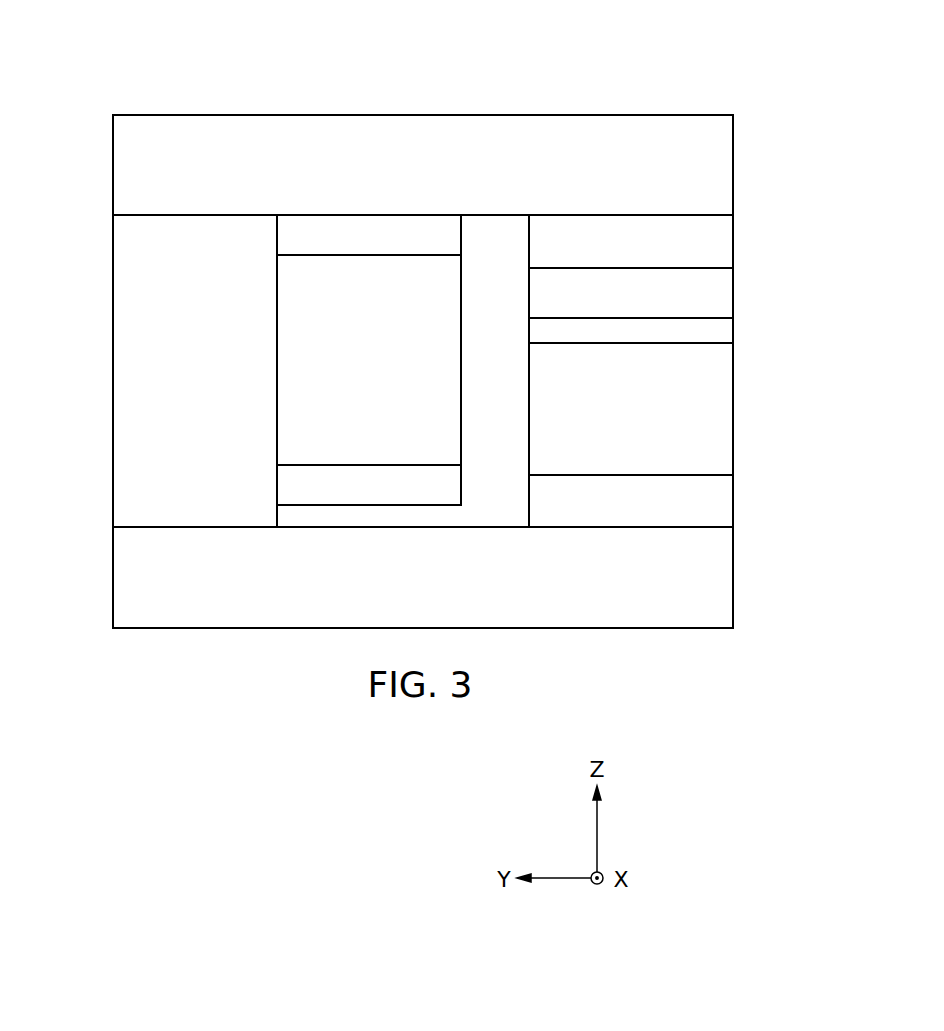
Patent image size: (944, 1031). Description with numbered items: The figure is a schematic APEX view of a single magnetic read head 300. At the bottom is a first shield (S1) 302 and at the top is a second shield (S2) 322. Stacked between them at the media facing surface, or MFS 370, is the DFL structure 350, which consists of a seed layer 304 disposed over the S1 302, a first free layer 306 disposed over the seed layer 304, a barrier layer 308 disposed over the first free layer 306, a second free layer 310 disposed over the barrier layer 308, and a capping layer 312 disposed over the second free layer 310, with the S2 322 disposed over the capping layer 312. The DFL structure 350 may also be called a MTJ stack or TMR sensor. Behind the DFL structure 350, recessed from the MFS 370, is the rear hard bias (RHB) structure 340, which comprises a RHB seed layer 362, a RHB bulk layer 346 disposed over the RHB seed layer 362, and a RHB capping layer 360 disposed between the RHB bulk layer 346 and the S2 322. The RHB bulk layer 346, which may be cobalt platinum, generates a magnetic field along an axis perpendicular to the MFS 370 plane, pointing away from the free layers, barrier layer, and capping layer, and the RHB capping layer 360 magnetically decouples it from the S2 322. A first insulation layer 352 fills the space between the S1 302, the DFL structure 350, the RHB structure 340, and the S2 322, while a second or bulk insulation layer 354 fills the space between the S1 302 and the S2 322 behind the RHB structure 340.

The single magnetic read head 300 is at (162, 96).
The first shield (S1) 302 is at (440, 593).
The seed layer 304 is at (648, 511).
The first free layer (FL) 306 is at (648, 424).
The barrier layer 308 is at (571, 329).
The second free layer (FL) 310 is at (648, 304).
The capping layer 312 is at (648, 254).
The second shield (S2) 322 is at (442, 178).
The rear hard bias (RHB) structure 340 is at (464, 216).
The RHB bulk layer 346 is at (388, 331).
The DFL structure 350 is at (748, 525).
The first insulation layer 352 is at (522, 451).
The second or bulk insulation layer 354 is at (212, 371).
The RHB capping layer 360 is at (388, 246).
The RHB seed layer 362 is at (388, 496).
The MFS 370 is at (737, 253).